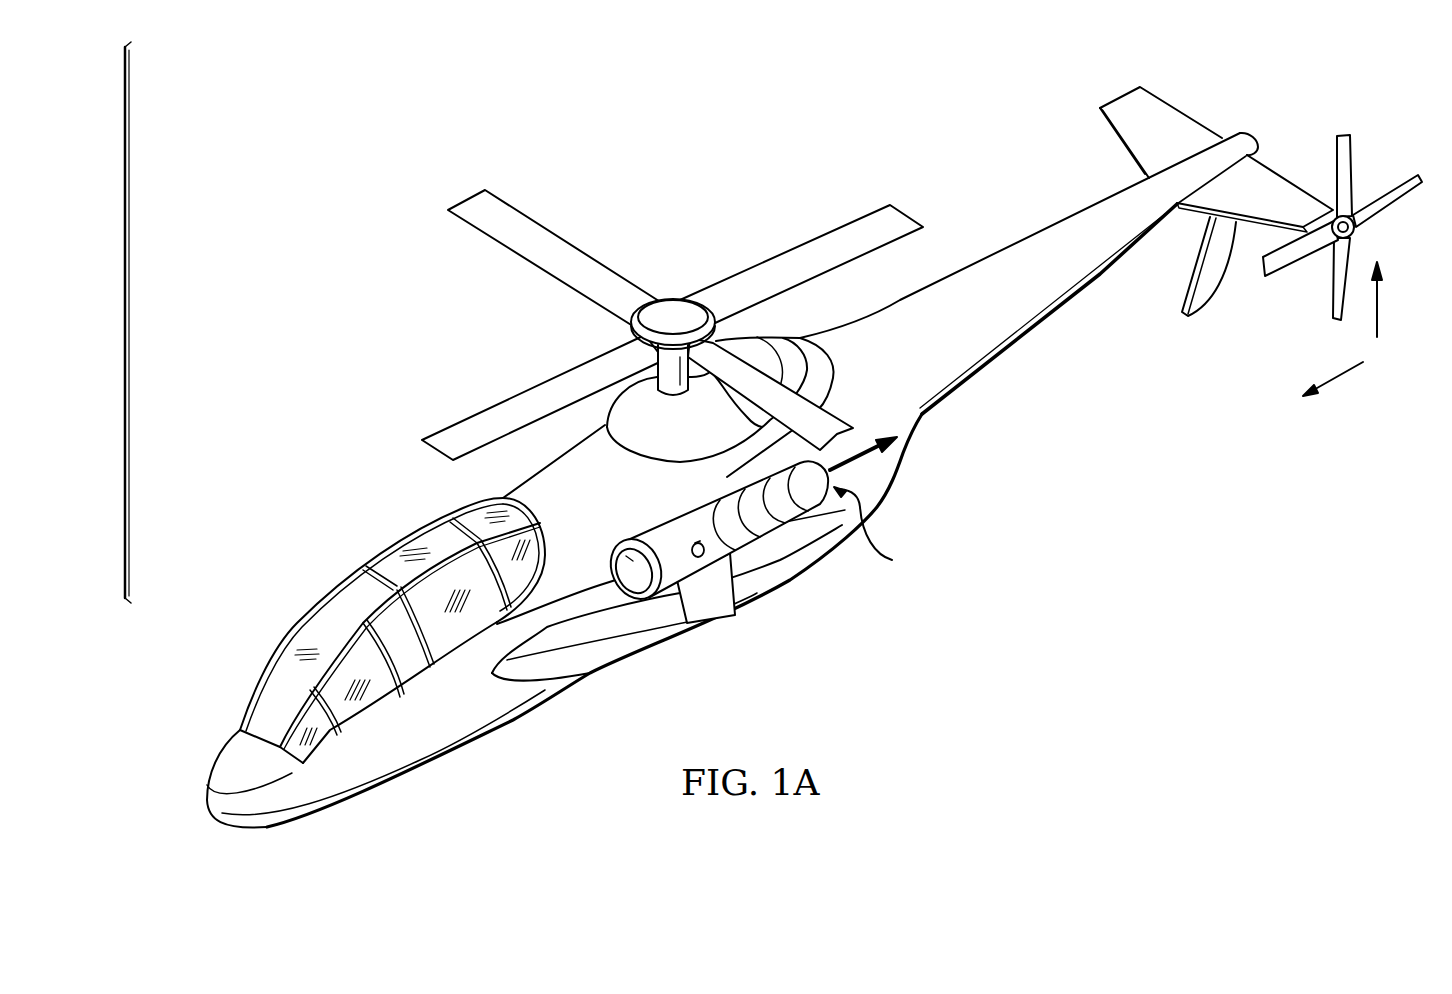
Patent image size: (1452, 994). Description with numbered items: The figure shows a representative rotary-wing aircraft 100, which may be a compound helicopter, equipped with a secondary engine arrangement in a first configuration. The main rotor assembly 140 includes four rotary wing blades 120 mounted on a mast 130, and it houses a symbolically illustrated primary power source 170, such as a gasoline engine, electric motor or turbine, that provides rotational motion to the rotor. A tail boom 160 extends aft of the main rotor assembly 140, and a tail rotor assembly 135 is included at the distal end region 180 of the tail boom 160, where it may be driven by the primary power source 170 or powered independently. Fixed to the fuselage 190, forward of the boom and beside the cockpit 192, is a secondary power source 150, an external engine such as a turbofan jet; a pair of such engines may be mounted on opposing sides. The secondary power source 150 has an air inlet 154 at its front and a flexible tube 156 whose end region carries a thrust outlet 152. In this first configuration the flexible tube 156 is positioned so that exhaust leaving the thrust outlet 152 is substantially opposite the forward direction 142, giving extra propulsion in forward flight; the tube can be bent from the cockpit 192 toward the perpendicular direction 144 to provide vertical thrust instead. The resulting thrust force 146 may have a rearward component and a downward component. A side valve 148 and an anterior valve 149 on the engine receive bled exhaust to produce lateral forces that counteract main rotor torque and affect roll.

The aircraft 100 is at (791, 442).
The rotary wing blades 120 is at (521, 222).
The mast 130 is at (695, 307).
The tail rotor assembly 135 is at (1379, 147).
The main rotor assembly 140 is at (125, 316).
The forward direction 142 is at (1340, 373).
The perpendicular direction 144 is at (1378, 303).
The thrust force 146 is at (862, 458).
The side valve 148 is at (703, 552).
The anterior valve 149 is at (665, 592).
The secondary power source 150 is at (699, 554).
The thrust outlet 152 is at (885, 529).
The air inlet 154 is at (627, 573).
The flexible tube 156 is at (767, 517).
The tail boom 160 is at (1093, 283).
The primary power source 170 is at (757, 348).
The distal end region 180 is at (1256, 114).
The fuselage 190 is at (592, 507).
The cockpit 192 is at (240, 678).